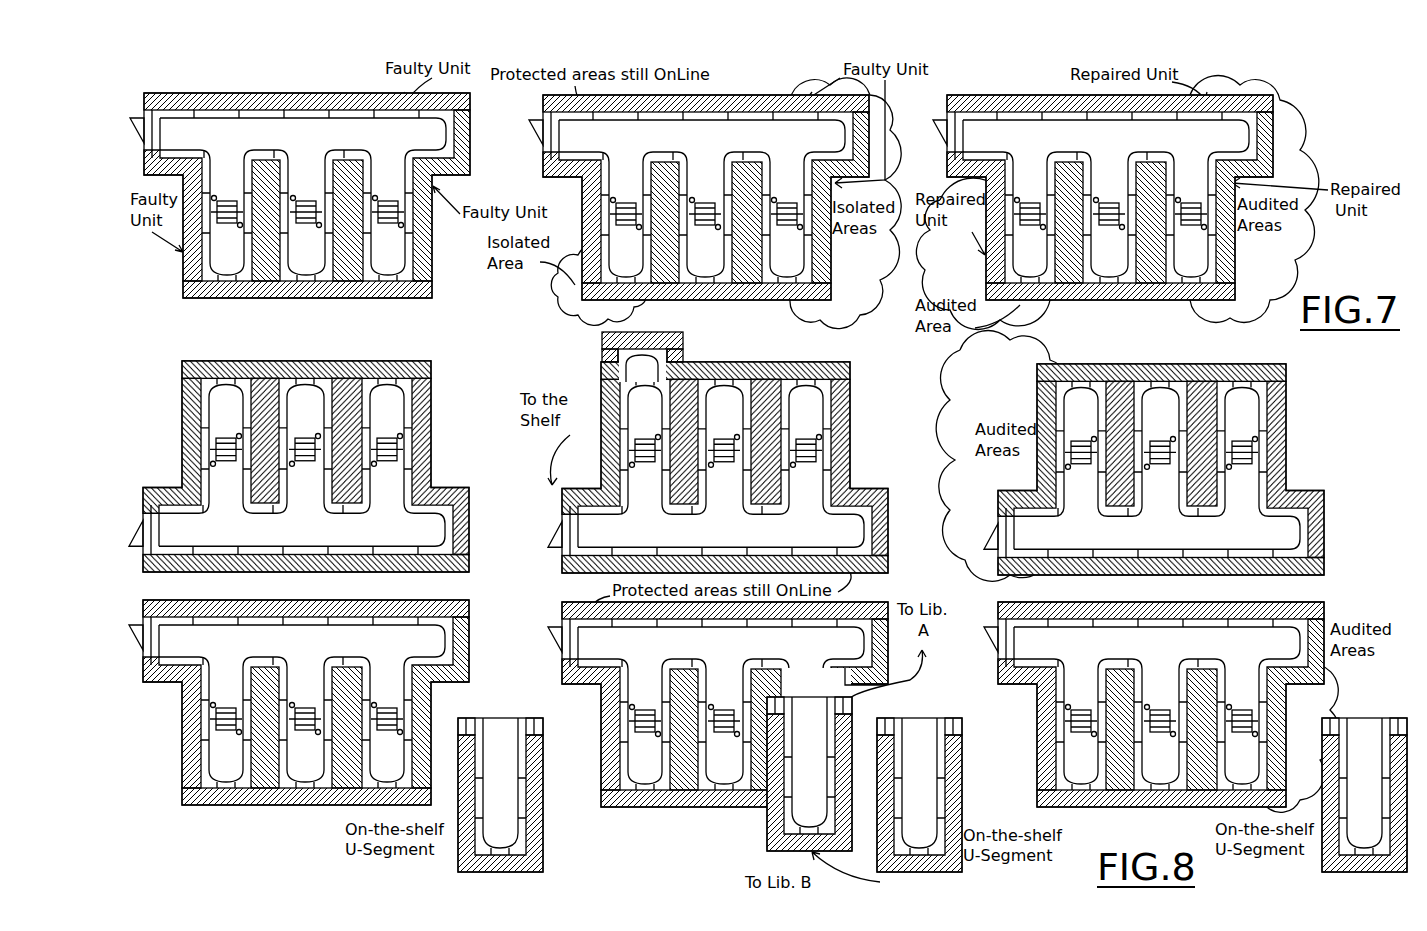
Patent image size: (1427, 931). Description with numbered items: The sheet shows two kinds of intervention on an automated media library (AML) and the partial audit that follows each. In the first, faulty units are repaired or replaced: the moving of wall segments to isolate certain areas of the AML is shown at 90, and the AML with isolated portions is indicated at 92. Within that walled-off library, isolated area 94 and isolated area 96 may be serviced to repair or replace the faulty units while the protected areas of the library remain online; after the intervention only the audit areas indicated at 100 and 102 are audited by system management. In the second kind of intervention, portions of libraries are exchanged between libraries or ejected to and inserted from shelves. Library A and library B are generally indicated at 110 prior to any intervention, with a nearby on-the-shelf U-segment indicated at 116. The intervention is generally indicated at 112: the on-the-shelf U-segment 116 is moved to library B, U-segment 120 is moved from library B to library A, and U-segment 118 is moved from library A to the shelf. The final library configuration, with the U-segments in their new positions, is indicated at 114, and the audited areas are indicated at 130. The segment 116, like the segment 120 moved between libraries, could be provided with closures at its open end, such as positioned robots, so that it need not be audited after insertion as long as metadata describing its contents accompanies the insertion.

In FIG. 7, the moving of wall segments to isolate certain areas 90 is at (307, 86).
In FIG. 7, the AML with isolated portions 92 is at (722, 88).
In FIG. 7, the isolated area 94 is at (589, 285).
In FIG. 7, the isolated area 96 is at (845, 305).
In FIG. 7, the audit area 100 is at (1101, 197).
In FIG. 7, the audit area 102 is at (1240, 318).
In FIG. 8, the library A and library B prior to intervention 110 is at (309, 350).
In FIG. 8, the intervention 112 is at (729, 352).
In FIG. 8, the final library configuration 114 is at (1167, 352).
In FIG. 8, the on-the-shelf U-segment 116 is at (458, 858).
In FIG. 8, the U-segment 118 is at (652, 336).
In FIG. 8, the U-segment 120 is at (762, 850).
In FIG. 8, the audited areas 130 is at (990, 375).